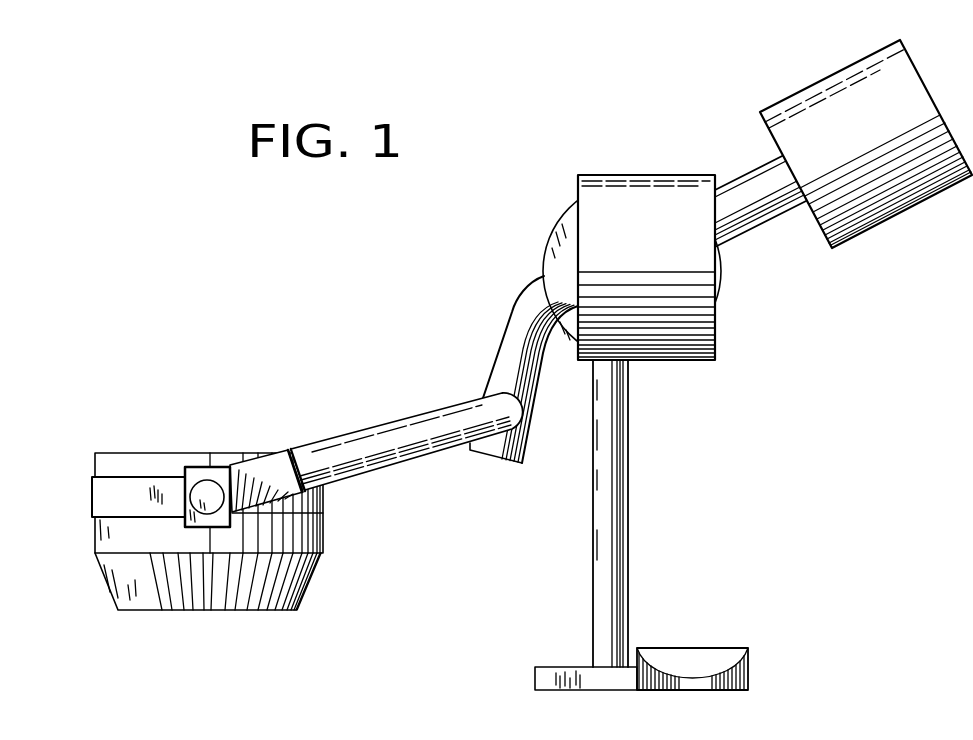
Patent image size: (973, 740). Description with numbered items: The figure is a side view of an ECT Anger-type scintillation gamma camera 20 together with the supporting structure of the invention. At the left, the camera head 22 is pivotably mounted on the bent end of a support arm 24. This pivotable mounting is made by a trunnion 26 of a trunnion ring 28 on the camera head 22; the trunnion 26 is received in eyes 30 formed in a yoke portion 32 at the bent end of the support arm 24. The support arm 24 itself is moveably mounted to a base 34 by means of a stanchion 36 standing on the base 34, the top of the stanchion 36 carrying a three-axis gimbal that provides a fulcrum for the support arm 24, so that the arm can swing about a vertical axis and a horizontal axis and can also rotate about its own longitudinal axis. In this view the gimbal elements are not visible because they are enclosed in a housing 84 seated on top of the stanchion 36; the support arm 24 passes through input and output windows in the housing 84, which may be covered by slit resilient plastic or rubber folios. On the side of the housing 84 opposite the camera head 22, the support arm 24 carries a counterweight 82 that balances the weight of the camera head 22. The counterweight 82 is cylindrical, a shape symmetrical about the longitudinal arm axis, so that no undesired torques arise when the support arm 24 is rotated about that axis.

The scintillation gamma camera 20 is at (462, 333).
The camera head 22 is at (148, 545).
The support arm 24 is at (524, 291).
The trunnion 26 is at (194, 485).
The trunnion ring 28 is at (133, 480).
The eyes 30 is at (206, 494).
The yoke portion 32 is at (398, 418).
The base 34 is at (712, 648).
The stanchion 36 is at (626, 470).
The counterweight 82 is at (853, 240).
The housing 84 is at (704, 360).